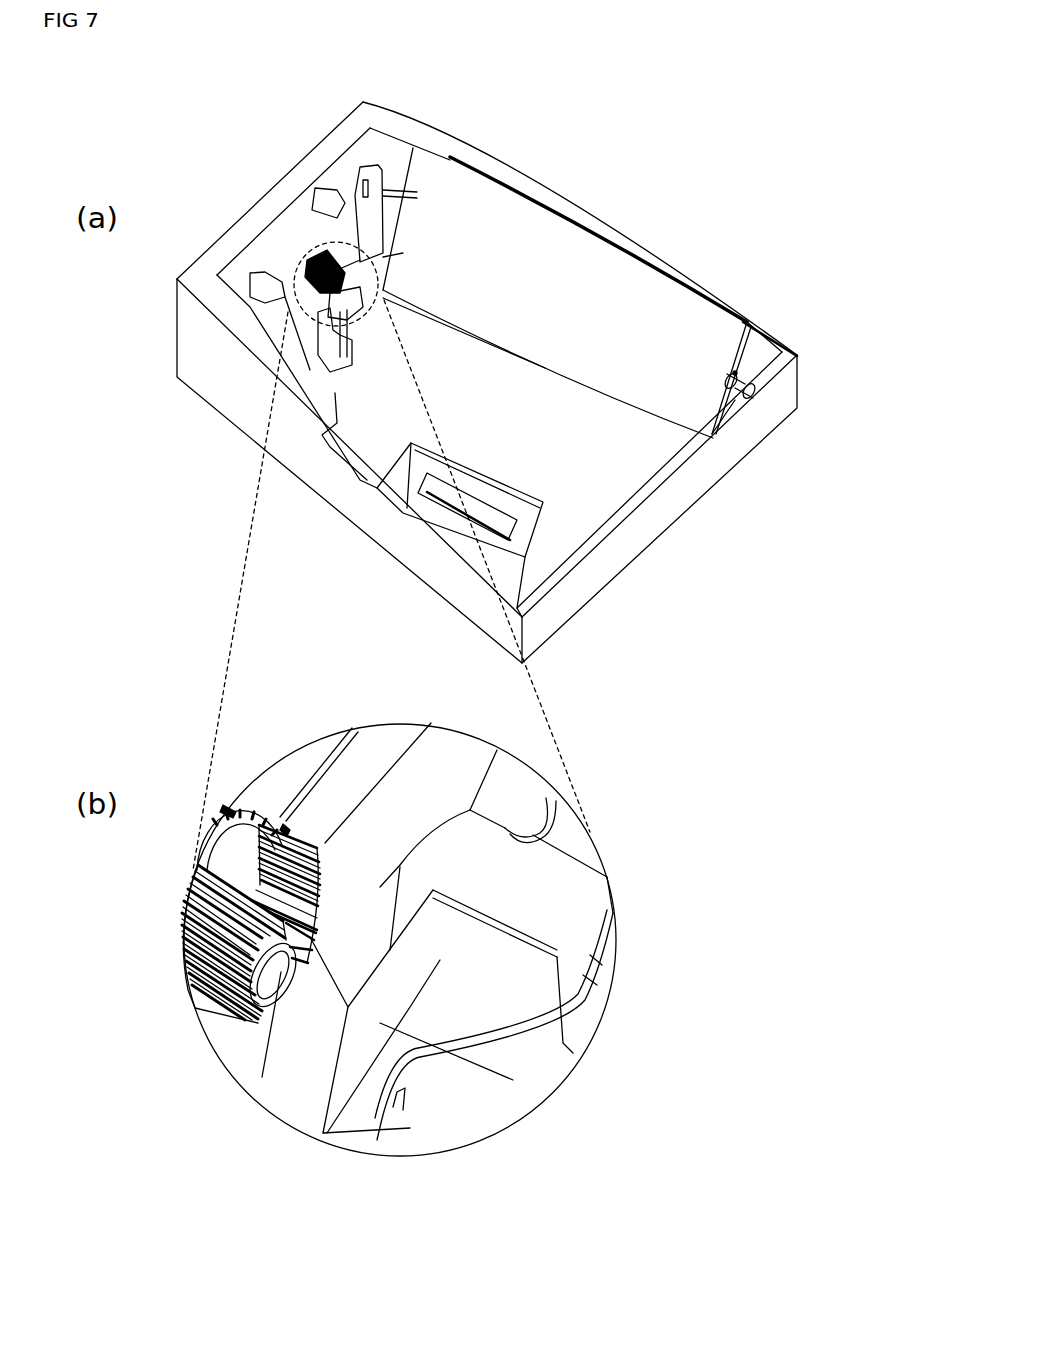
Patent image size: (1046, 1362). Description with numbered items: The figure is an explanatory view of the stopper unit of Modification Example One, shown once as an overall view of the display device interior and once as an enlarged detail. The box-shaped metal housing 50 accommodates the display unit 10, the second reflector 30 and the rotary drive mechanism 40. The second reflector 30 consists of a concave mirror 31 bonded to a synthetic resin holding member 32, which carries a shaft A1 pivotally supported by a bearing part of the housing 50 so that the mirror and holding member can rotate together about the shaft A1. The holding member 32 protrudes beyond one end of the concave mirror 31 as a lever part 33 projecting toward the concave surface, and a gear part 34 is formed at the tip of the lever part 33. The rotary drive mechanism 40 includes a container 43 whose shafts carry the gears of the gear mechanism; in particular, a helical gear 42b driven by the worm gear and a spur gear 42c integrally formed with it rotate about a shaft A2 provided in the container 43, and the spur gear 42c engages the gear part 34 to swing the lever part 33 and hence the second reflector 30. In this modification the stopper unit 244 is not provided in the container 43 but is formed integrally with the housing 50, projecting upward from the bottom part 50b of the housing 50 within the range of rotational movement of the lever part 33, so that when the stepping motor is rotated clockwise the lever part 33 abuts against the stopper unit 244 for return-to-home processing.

The display unit 10 is at (495, 535).
The second reflector 30 is at (587, 280).
The concave mirror 31 is at (682, 322).
The holding member 32 is at (757, 322).
The lever part 33 is at (360, 230).
The gear part 34 is at (280, 817).
The rotary drive mechanism 40 is at (312, 226).
The helical gear 42b is at (245, 778).
The spur gear 42c is at (196, 1022).
The container 43 is at (293, 263).
The housing 50 is at (223, 385).
The bottom part 50b is at (587, 477).
The stopper unit 244 is at (403, 253).
The shaft A1 is at (733, 410).
The shaft A2 is at (277, 973).